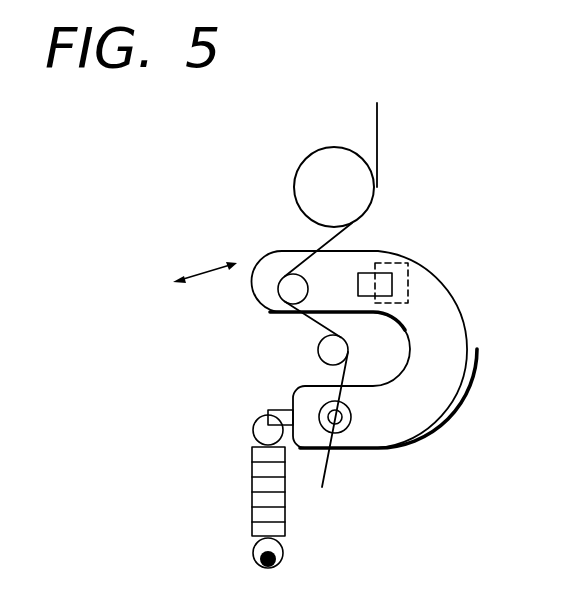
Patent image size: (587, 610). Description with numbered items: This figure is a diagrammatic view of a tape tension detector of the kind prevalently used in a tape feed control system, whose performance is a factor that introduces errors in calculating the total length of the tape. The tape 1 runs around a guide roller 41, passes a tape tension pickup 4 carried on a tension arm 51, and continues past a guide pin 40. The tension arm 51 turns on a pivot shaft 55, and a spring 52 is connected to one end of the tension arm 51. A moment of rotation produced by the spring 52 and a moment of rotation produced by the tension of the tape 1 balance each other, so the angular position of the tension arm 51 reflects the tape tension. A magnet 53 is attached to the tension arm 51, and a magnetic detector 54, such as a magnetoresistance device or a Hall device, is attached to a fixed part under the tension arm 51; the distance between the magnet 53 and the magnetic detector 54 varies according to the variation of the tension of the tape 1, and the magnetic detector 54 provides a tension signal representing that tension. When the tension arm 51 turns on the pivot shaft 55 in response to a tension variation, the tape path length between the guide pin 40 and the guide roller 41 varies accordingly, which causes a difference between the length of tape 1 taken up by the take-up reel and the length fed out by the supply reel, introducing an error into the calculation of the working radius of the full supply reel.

The tape 1 is at (379, 110).
The guide roller 41 is at (307, 165).
The tape tension pickup 4 is at (280, 299).
The guide pin 40 is at (318, 352).
The tension arm 51 is at (445, 413).
The spring 52 is at (250, 470).
The magnet 53 is at (392, 285).
The magnetic detector 54 is at (378, 266).
The pivot shaft 55 is at (345, 431).